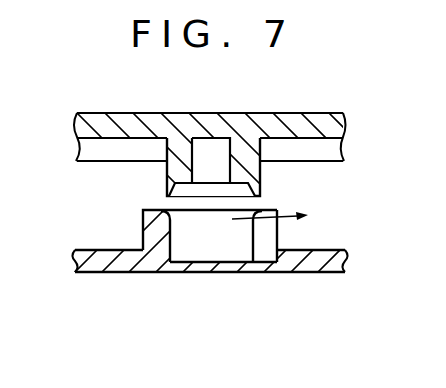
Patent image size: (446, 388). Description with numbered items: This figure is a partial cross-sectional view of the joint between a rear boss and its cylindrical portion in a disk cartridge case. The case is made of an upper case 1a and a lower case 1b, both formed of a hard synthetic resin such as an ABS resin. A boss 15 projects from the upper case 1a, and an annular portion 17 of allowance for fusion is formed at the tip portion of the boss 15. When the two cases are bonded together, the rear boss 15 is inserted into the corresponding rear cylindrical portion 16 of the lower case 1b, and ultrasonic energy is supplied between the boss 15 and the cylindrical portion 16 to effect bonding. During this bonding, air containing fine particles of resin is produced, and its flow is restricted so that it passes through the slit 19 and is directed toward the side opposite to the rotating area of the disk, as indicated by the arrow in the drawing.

The upper case 1a is at (306, 120).
The lower case 1b is at (252, 262).
The boss 15 is at (176, 172).
The cylindrical portion 16 is at (143, 212).
The annular portion of allowance for fusion 17 is at (260, 178).
The slit 19 is at (271, 238).